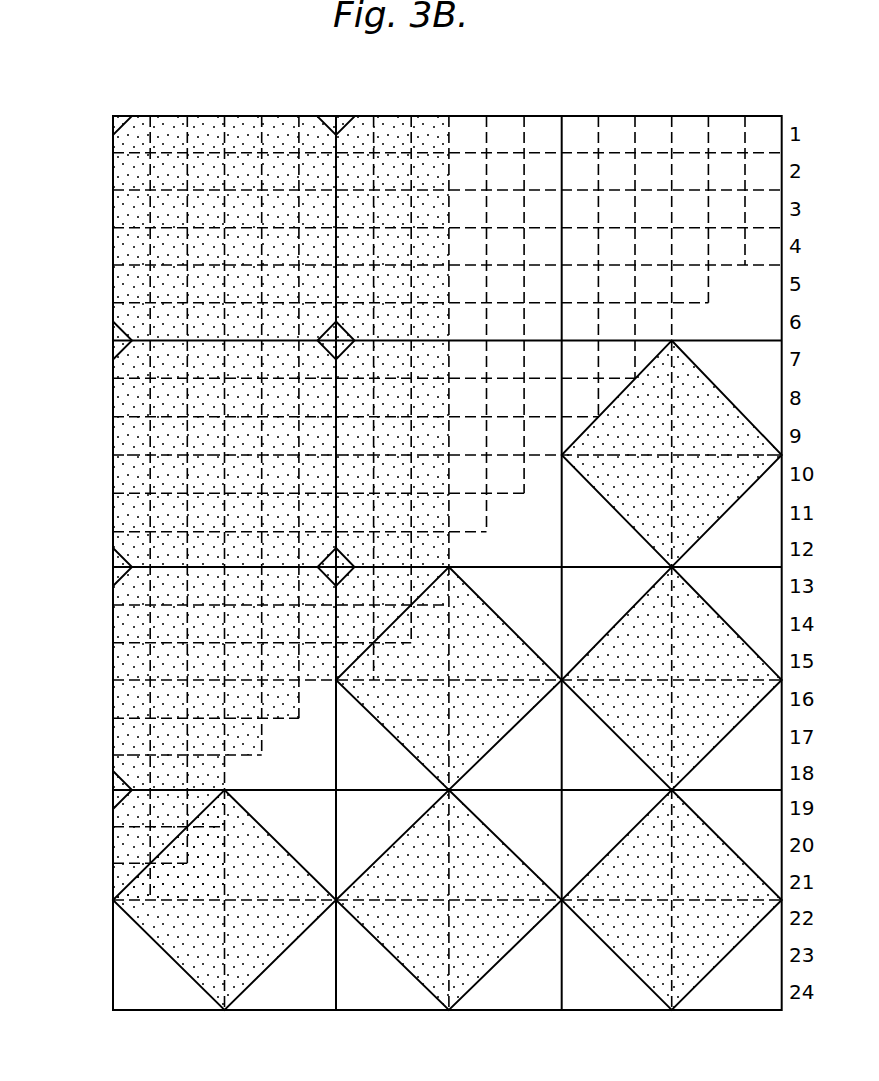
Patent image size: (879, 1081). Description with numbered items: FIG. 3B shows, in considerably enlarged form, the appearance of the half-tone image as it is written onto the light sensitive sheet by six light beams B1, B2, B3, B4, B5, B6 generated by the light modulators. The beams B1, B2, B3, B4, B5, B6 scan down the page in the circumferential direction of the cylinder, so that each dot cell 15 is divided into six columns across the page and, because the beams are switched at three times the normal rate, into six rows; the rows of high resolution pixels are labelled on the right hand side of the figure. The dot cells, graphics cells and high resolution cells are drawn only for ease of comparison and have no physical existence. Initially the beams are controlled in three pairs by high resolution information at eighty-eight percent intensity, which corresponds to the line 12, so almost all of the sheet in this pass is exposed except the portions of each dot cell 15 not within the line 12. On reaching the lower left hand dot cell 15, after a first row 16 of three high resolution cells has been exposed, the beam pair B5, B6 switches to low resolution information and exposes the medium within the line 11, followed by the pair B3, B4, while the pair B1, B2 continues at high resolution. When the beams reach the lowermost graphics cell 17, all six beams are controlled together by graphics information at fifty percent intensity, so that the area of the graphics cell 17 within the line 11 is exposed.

The line 11 is at (449, 676).
The line 12 is at (209, 440).
The dot cell 15 is at (178, 1013).
The first row 16 is at (112, 812).
The graphics cell 17 is at (112, 968).
The light beam B1 is at (118, 111).
The light beam B2 is at (133, 111).
The light beam B3 is at (160, 111).
The light beam B4 is at (172, 111).
The light beam B5 is at (202, 111).
The light beam B6 is at (216, 111).